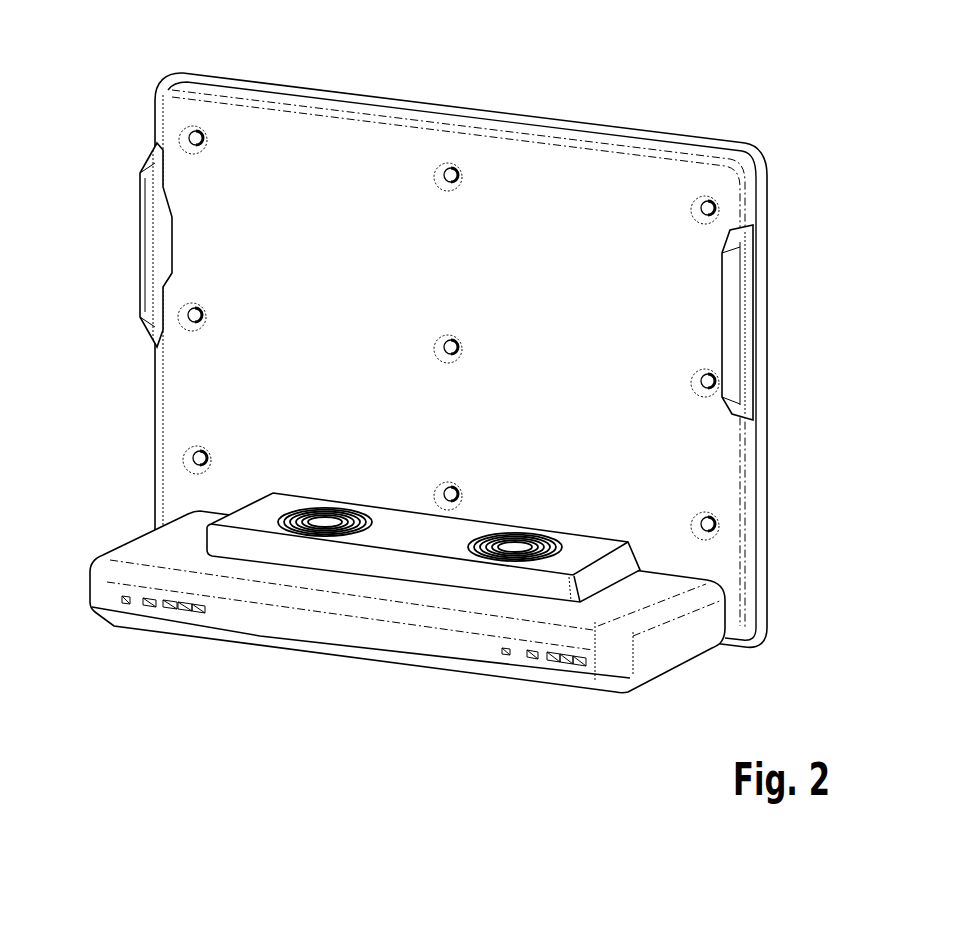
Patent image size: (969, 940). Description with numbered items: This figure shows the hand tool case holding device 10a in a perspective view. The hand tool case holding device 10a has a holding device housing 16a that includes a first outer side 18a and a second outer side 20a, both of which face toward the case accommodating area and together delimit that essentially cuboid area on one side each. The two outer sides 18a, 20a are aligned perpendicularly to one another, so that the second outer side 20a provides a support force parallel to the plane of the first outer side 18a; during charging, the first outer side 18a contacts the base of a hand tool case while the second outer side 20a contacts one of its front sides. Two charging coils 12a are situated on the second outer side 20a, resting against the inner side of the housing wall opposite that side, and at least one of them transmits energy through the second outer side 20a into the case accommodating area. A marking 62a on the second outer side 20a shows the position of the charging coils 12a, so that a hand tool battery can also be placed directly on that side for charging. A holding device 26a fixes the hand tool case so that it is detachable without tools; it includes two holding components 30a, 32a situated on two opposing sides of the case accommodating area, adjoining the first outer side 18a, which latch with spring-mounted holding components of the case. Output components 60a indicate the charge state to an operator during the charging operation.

The hand tool case holding device 10a is at (750, 98).
The charging coil 12a is at (299, 550).
The holding device housing 16a is at (728, 465).
The first outer side 18a is at (546, 183).
The second outer side 20a is at (430, 521).
The holding device 26a is at (124, 241).
The holding component 30a is at (147, 272).
The holding component 32a is at (733, 343).
The output component 60a is at (156, 622).
The marking 62a is at (282, 540).